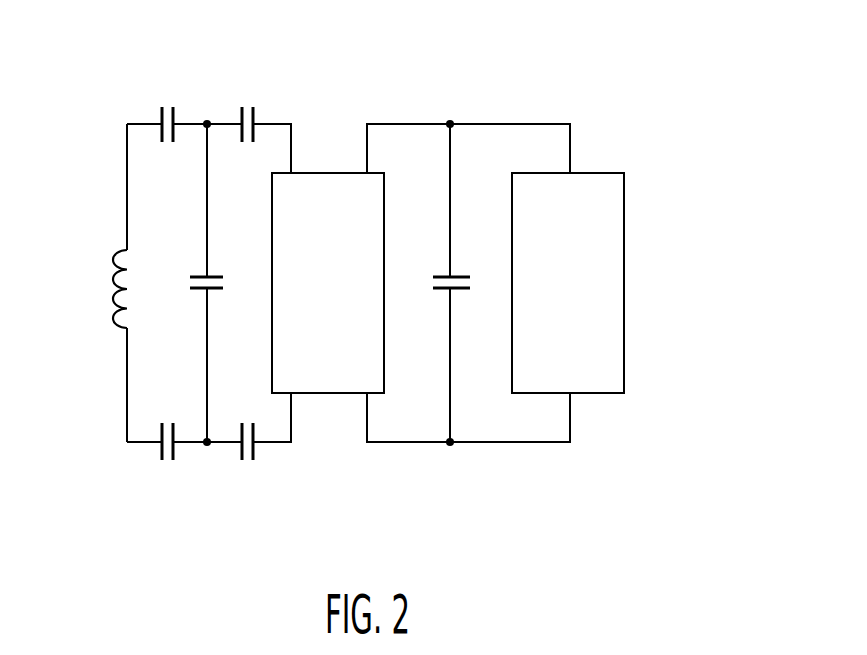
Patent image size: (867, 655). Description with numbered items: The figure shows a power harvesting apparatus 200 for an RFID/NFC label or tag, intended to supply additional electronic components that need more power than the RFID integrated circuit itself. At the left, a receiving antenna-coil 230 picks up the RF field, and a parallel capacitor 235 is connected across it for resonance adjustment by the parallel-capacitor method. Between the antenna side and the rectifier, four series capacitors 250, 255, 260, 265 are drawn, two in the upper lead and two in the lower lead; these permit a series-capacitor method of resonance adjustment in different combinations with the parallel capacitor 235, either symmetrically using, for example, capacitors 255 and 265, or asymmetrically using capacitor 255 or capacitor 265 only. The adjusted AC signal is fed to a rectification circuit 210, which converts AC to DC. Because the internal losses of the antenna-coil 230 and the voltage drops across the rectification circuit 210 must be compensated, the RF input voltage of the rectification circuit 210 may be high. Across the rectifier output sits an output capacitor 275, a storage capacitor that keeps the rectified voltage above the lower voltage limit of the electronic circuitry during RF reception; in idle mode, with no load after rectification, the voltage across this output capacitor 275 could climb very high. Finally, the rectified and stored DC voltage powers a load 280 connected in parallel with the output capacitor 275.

The power harvesting apparatus 200 is at (671, 76).
The rectification circuit 210 is at (343, 295).
The receiving antenna-coil 230 is at (113, 259).
The parallel capacitor 235 is at (200, 275).
The series capacitor 250 is at (160, 111).
The series capacitor 255 is at (257, 115).
The series capacitor 260 is at (160, 455).
The series capacitor 265 is at (256, 455).
The output capacitor 275 is at (445, 275).
The load 280 is at (584, 295).